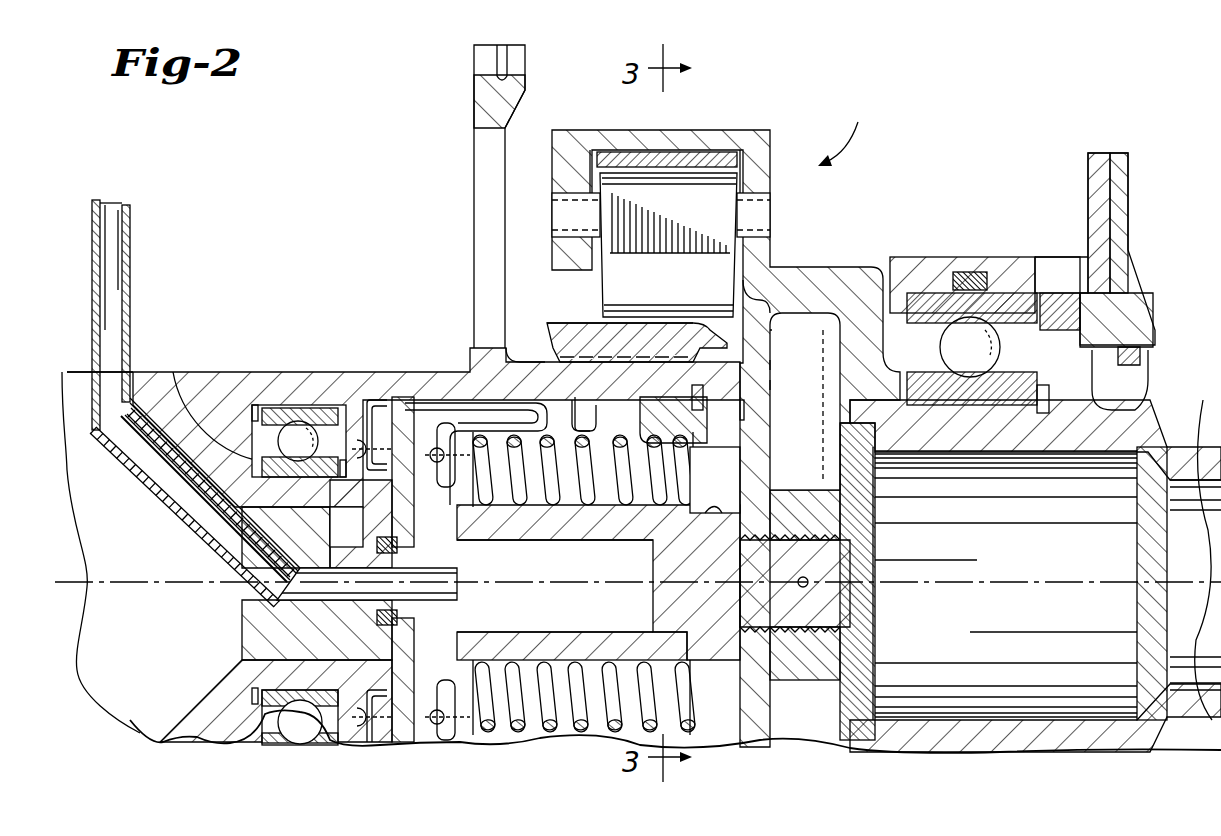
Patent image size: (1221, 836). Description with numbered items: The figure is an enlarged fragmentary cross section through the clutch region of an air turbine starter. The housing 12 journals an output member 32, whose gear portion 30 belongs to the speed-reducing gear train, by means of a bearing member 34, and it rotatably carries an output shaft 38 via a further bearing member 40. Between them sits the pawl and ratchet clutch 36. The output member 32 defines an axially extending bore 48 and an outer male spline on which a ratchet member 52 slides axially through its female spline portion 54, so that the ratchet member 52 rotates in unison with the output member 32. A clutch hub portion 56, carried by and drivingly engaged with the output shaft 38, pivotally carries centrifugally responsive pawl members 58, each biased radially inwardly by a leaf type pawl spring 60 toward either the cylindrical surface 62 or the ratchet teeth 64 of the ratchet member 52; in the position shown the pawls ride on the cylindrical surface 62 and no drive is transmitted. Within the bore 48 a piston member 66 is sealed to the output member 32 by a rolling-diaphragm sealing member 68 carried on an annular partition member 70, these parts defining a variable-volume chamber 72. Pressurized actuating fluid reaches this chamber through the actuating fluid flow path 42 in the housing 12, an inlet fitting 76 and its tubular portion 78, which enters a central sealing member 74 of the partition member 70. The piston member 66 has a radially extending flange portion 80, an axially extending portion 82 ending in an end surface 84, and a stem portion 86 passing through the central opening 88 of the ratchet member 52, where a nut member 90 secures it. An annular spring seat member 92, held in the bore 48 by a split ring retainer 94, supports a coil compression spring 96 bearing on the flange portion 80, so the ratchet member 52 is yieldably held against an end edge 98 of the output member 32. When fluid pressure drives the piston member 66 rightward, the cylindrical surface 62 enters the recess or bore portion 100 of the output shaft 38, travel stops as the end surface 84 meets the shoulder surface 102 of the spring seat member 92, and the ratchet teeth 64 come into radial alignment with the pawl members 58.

The housing 12 is at (178, 352).
The gear portion 30 is at (555, 356).
The output member 32 is at (474, 206).
The bearing member 34 is at (292, 445).
The pawl and ratchet clutch 36 is at (851, 130).
The output shaft 38 is at (1152, 430).
The bearing member 40 is at (1002, 344).
The actuating fluid flow path 42 is at (131, 272).
The axially extending bore 48 is at (605, 395).
The ratchet member 52 is at (770, 362).
The female spline portion 54 is at (556, 326).
The clutch hub portion 56 is at (760, 128).
The pawl members 58 is at (740, 262).
The pawl springs 60 is at (706, 152).
The cylindrical surface 62 is at (762, 300).
The ratchet teeth 64 is at (578, 322).
The piston member 66 is at (538, 632).
The sealing member 68 is at (442, 402).
The annular partition member 70 is at (398, 732).
The variable-volume chamber 72 is at (555, 586).
The sealing member 74 is at (405, 547).
The inlet fitting 76 is at (250, 624).
The tubular portion 78 is at (405, 612).
The flange portion 80 is at (462, 492).
The axially extending portion 82 is at (580, 376).
The end surface 84 is at (590, 402).
The stem portion 86 is at (850, 612).
The central opening 88 is at (714, 540).
The nut member 90 is at (806, 490).
The spring seat member 92 is at (680, 440).
The split ring retainer 94 is at (740, 412).
The coil compression spring 96 is at (578, 670).
The end edge 98 is at (770, 384).
The recess or bore portion 100 is at (770, 332).
The shoulder surface 102 is at (692, 398).